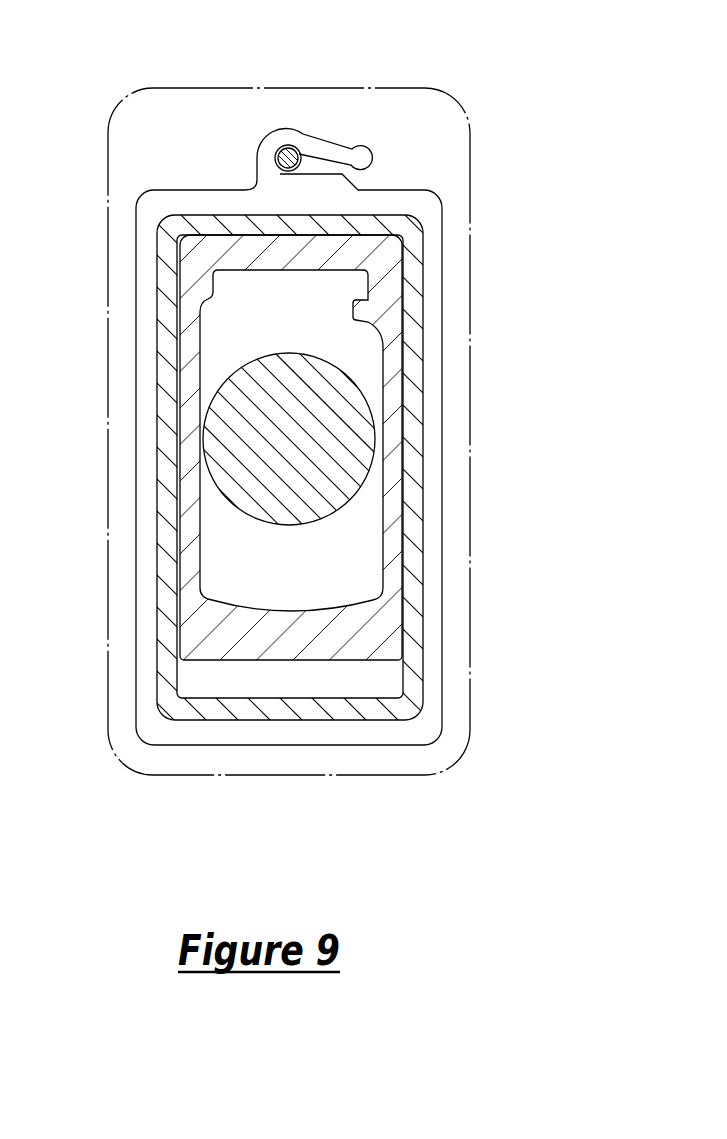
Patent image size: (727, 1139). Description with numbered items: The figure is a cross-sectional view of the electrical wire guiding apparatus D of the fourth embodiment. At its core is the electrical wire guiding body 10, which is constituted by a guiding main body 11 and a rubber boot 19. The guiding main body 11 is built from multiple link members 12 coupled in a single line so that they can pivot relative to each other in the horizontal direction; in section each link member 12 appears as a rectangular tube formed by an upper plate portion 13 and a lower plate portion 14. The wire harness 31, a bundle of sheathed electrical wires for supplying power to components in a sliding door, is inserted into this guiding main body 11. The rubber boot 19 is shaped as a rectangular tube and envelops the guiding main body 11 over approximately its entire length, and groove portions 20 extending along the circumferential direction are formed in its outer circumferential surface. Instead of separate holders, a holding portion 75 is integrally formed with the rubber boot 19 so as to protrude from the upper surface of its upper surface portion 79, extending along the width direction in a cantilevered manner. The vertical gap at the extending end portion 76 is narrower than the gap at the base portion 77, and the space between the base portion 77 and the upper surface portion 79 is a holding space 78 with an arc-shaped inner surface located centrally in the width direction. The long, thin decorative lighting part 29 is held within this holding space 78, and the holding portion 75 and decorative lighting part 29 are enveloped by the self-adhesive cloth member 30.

The electrical wire guiding apparatus D is at (493, 67).
The electrical wire guiding body 10 is at (180, 178).
The guiding main body 11 is at (407, 173).
The link member 12 is at (380, 262).
The upper plate portion 13 is at (270, 252).
The lower plate portion 14 is at (282, 647).
The rubber boot 19 is at (408, 224).
The groove portion 20 is at (360, 215).
The decorative lighting part 29 is at (298, 150).
The self-adhesive cloth member 30 is at (470, 318).
The wire harness 31 is at (267, 472).
The holding portion 75 is at (325, 143).
The extending end portion 76 is at (352, 163).
The base portion 77 is at (285, 128).
The holding space 78 is at (291, 147).
The upper surface portion 79 is at (218, 188).